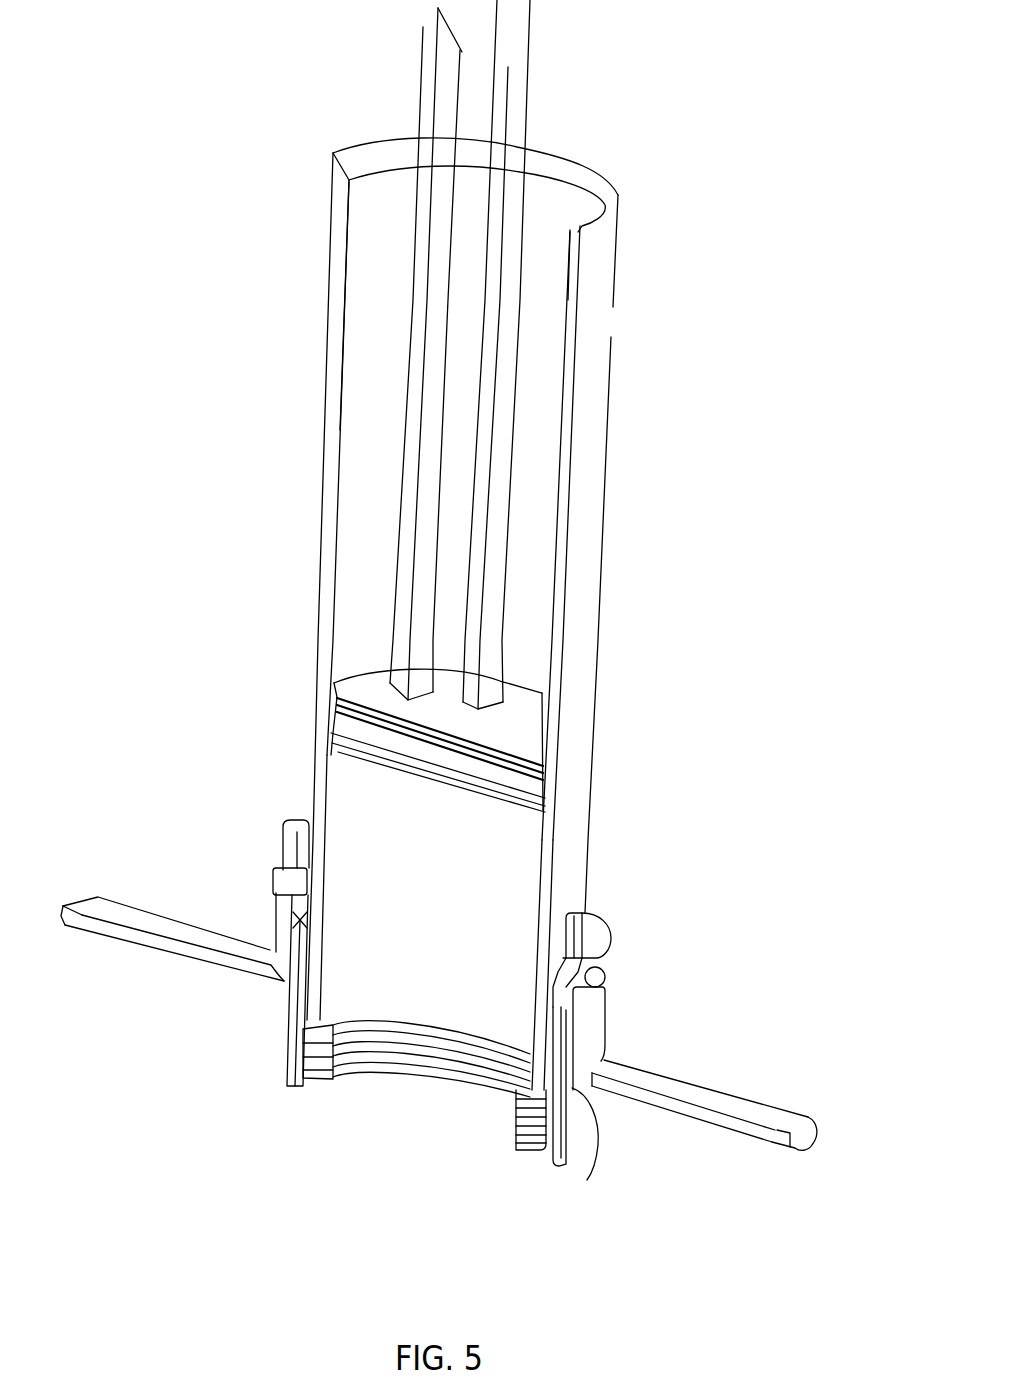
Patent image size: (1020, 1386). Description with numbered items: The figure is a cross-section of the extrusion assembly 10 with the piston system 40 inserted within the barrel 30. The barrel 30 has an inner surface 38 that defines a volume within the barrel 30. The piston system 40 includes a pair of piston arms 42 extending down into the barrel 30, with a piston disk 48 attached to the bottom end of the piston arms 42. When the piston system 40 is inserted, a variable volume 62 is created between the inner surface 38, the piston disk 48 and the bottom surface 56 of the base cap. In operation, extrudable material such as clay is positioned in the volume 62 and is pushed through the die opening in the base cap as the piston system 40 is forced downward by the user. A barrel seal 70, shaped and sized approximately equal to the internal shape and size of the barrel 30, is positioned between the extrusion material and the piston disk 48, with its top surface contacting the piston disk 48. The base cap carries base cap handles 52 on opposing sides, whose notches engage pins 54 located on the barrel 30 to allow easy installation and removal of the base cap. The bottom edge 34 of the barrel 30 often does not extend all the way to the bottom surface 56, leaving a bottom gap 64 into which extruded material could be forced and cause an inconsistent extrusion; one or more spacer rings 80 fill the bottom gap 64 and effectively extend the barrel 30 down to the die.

The extrusion assembly 10 is at (292, 448).
The barrel 30 is at (595, 373).
The bottom edge 34 is at (587, 1180).
The inner surface 38 is at (371, 291).
The piston system 40 is at (523, 280).
The piston arms 42 is at (500, 457).
The piston disk 48 is at (533, 708).
The base cap handles 52 is at (713, 1097).
The pins 54 is at (603, 982).
The bottom surface 56 is at (317, 1077).
The variable volume 62 is at (385, 800).
The bottom gap 64 is at (305, 1048).
The barrel seal 70 is at (527, 780).
The spacer rings 80 is at (518, 1112).